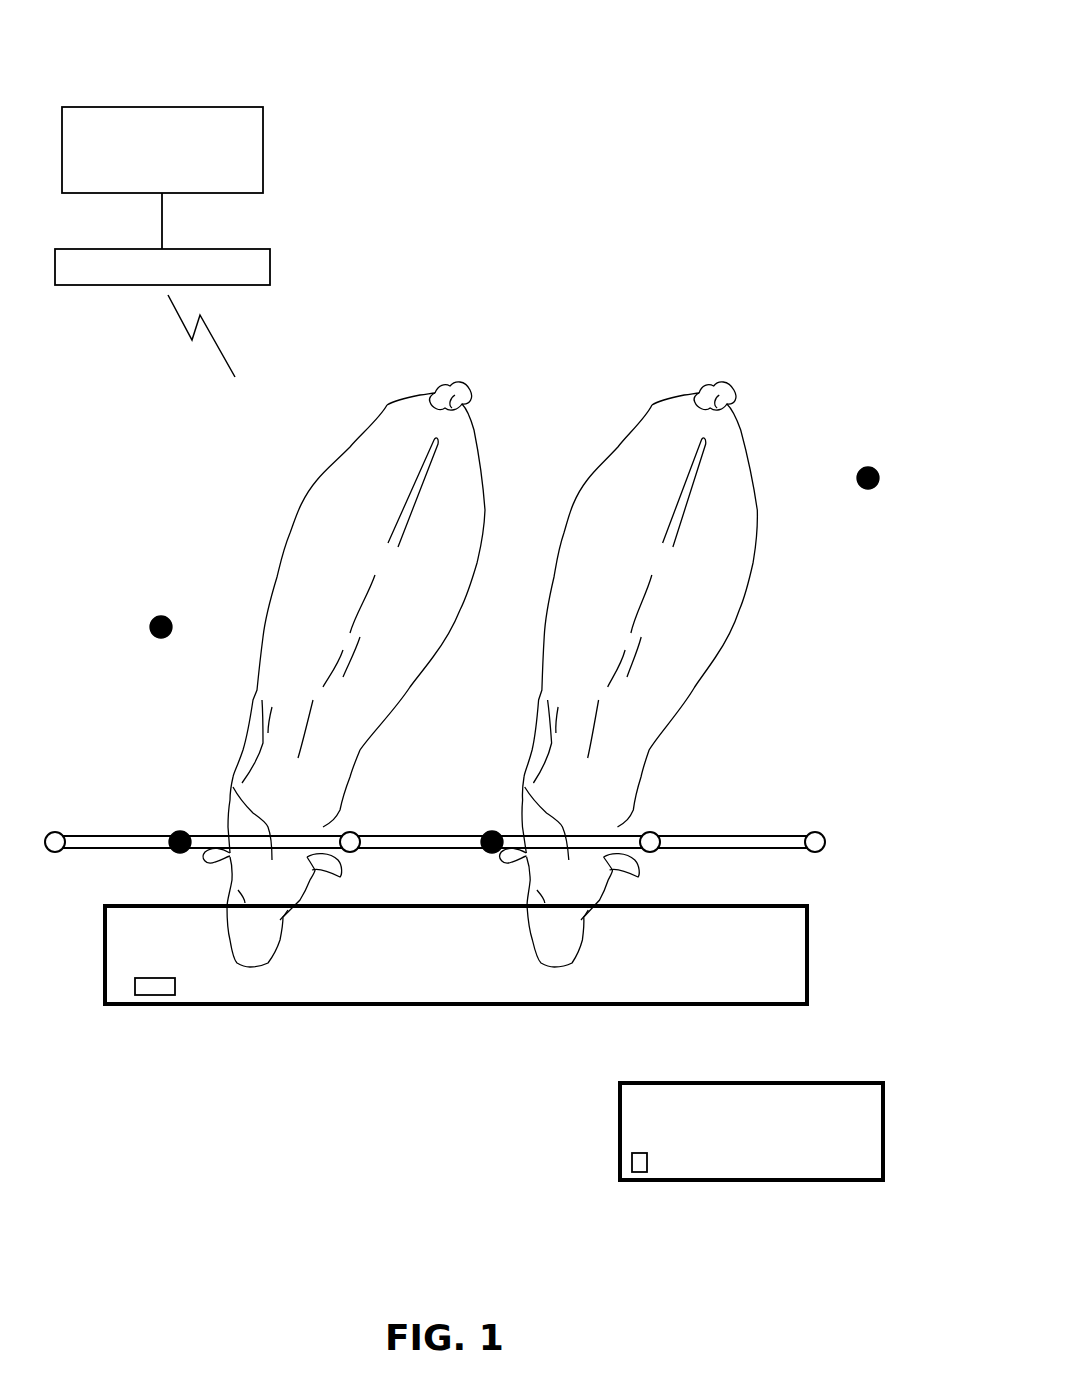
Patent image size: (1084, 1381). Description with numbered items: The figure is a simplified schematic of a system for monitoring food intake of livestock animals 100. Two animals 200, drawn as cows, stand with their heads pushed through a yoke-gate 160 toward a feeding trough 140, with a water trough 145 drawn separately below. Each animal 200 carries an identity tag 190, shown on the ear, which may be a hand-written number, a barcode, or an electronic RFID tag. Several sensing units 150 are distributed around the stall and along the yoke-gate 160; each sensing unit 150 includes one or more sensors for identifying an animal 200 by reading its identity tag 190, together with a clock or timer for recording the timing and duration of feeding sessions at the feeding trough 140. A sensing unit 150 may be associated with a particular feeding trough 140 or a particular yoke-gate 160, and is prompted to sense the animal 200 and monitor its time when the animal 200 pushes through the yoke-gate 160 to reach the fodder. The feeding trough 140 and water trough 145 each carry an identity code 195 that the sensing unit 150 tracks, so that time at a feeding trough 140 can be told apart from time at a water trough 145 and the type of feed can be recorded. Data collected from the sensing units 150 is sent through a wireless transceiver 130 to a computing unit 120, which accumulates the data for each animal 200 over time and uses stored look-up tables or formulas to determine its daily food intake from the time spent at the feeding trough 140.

The system for monitoring food intake of livestock animals 100 is at (668, 340).
The computing unit 120 is at (213, 107).
The wireless transceiver 130 is at (272, 267).
The feeding trough 140 is at (808, 978).
The water trough 145 is at (885, 1157).
The sensing unit 150 is at (162, 615).
The yoke-gate 160 is at (230, 803).
The identity tag 190 is at (210, 860).
The identity code 195 is at (162, 997).
The animal 200 is at (323, 478).